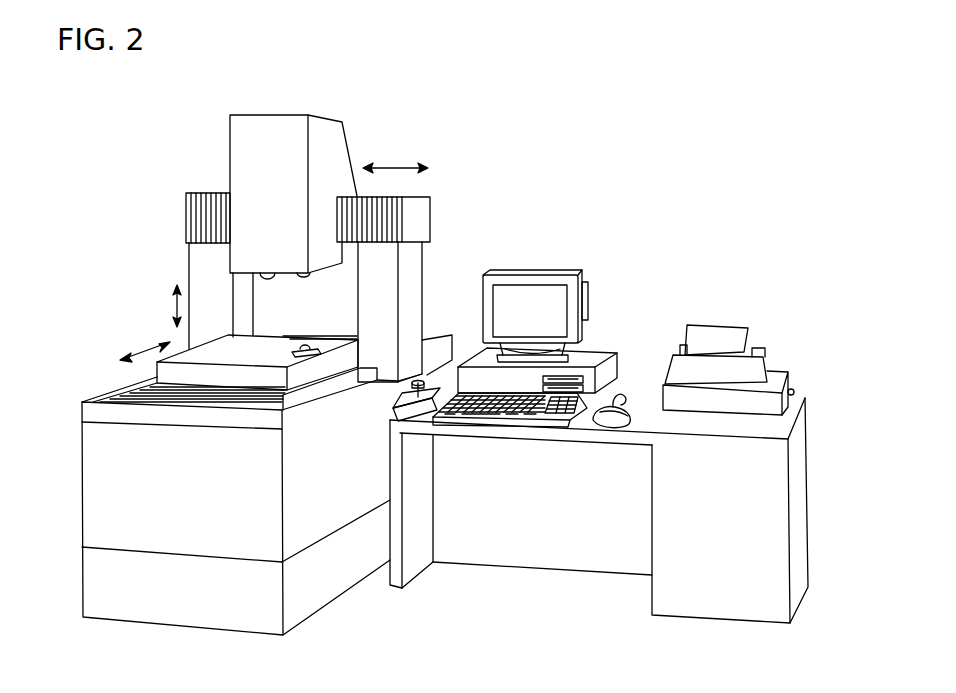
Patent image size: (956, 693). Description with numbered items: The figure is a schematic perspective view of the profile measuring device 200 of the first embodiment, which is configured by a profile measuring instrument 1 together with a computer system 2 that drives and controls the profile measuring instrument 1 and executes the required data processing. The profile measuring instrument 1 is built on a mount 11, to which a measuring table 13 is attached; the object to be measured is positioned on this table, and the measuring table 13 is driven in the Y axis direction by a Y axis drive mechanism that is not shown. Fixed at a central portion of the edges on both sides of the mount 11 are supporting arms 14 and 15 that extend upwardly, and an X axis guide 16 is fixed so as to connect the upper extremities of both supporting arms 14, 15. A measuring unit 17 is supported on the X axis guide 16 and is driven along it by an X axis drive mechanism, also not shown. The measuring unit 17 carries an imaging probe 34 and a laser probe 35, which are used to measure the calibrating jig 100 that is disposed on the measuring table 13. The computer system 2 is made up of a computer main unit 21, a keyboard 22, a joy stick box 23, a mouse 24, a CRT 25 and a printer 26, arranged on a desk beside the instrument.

The profile measuring instrument 1 is at (404, 118).
The computer system 2 is at (508, 245).
The profile measuring device 200 is at (496, 66).
The mount 11 is at (112, 392).
The measuring table 13 is at (226, 348).
The supporting arm 14 is at (190, 261).
The supporting arm 15 is at (407, 284).
The X axis guide 16 is at (200, 194).
The measuring unit 17 is at (230, 127).
The computer main unit 21 is at (595, 352).
The keyboard 22 is at (505, 420).
The joy stick box 23 is at (405, 405).
The mouse 24 is at (603, 420).
The CRT 25 is at (588, 306).
The printer 26 is at (737, 310).
The imaging probe 34 is at (266, 279).
The laser probe 35 is at (302, 278).
The calibrating jig 100 is at (283, 353).